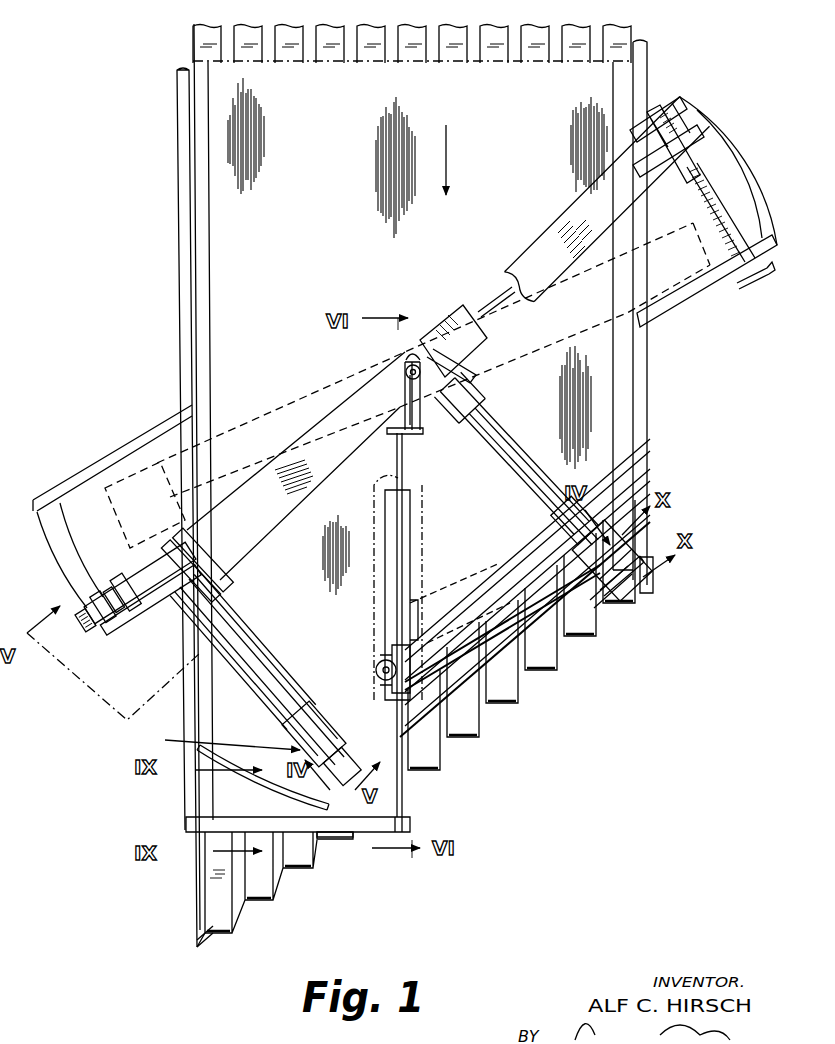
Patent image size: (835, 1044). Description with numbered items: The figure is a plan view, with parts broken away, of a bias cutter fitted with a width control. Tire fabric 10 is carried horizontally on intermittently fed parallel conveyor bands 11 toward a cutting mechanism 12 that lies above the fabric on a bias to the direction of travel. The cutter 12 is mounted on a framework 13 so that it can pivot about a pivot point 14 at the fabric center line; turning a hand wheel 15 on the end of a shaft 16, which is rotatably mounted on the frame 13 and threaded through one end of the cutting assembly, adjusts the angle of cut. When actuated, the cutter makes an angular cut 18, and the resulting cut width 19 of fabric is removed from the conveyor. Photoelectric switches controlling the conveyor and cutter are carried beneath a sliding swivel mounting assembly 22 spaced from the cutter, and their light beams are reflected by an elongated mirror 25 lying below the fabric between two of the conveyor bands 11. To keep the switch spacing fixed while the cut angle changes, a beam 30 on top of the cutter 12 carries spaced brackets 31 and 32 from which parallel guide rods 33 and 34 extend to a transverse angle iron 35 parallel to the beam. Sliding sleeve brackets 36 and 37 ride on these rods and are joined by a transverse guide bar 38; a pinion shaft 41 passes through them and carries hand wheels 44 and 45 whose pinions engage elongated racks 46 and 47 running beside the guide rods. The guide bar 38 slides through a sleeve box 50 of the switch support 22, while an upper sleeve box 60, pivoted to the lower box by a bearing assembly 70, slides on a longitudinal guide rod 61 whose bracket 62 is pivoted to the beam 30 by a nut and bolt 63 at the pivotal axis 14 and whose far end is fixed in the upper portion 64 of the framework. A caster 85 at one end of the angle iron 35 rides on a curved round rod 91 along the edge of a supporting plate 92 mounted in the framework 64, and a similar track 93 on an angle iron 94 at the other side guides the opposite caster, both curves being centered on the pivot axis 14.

The tire fabric 10 is at (216, 148).
The conveyor bands 11 is at (193, 37).
The cutting mechanism 12 is at (138, 555).
The framework 13 is at (102, 468).
The pivot point 14 is at (410, 362).
The hand wheel 15 is at (748, 280).
The shaft 16 is at (733, 188).
The angular cut 18 is at (492, 302).
The cut width of fabric 19 is at (613, 370).
The sliding swivel mounting assembly 22 is at (438, 745).
The elongated mirror 25 is at (410, 518).
The beam 30 is at (570, 222).
The bracket 31 is at (220, 577).
The bracket 32 is at (438, 325).
The guide rod 33 is at (234, 622).
The guide rod 34 is at (475, 410).
The transverse angle iron 35 is at (470, 688).
The sliding sleeve bracket 36 is at (316, 716).
The sliding sleeve bracket 37 is at (560, 486).
The transverse guide bar 38 is at (486, 598).
The pinion shaft 41 is at (518, 677).
The hand wheel 44 is at (219, 733).
The hand wheel 45 is at (595, 508).
The elongated rack 46 is at (198, 628).
The elongated rack 47 is at (494, 438).
The sleeve box 50 is at (376, 686).
The upper sleeve box 60 is at (397, 656).
The guide rod 61 is at (397, 463).
The bracket 62 is at (406, 383).
The nut and bolt 63 is at (408, 368).
The upper portion of machine framework 64 is at (186, 824).
The bearing assembly 70 is at (412, 614).
The caster 85 is at (320, 834).
The round rod track 91 is at (293, 802).
The horizontal supporting plate 92 is at (208, 796).
The track 93 is at (625, 578).
The angle iron 94 is at (602, 602).